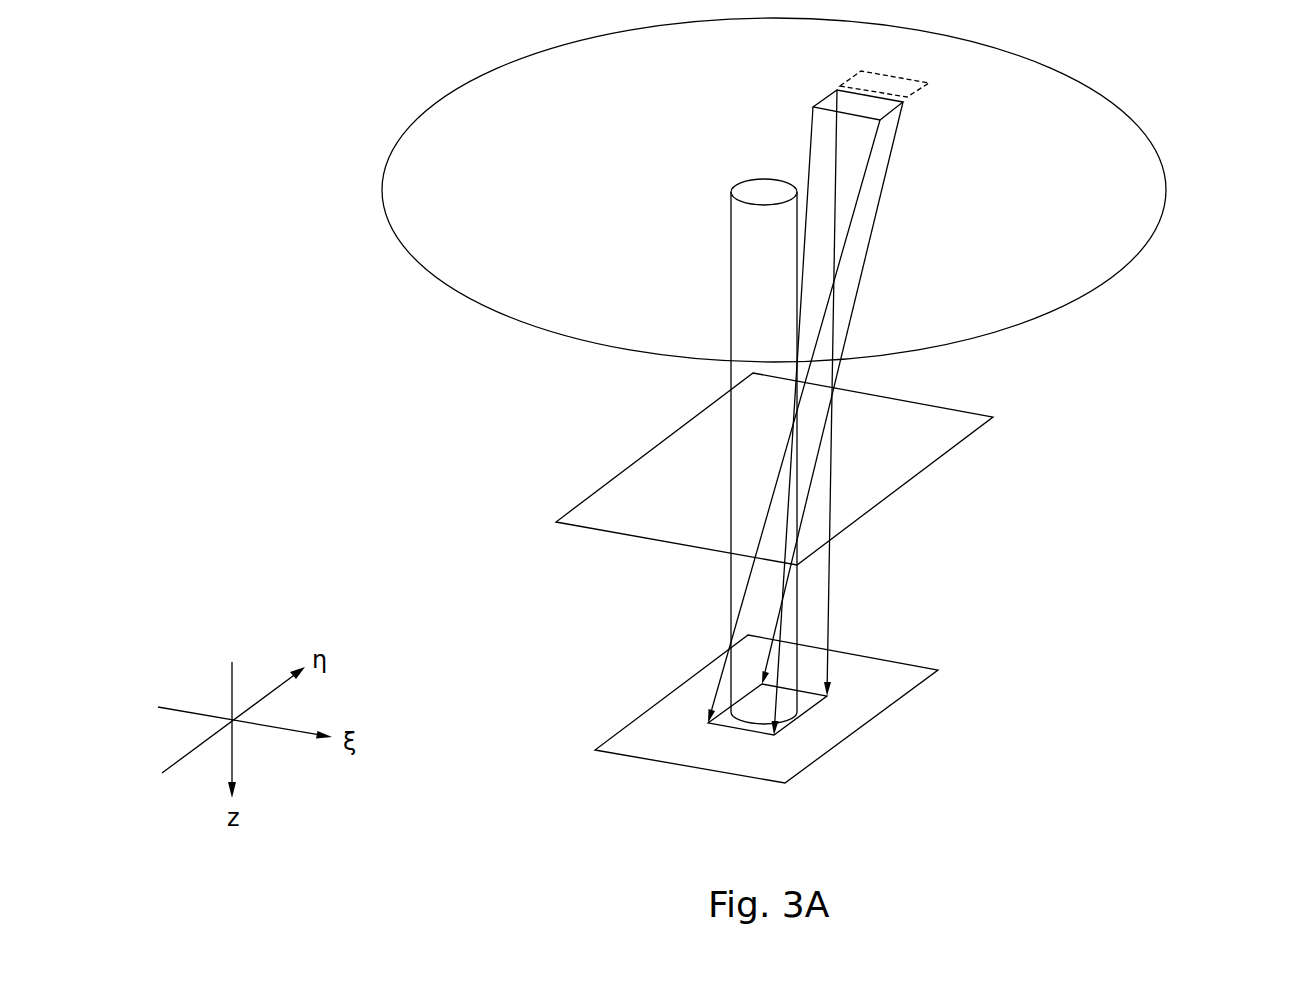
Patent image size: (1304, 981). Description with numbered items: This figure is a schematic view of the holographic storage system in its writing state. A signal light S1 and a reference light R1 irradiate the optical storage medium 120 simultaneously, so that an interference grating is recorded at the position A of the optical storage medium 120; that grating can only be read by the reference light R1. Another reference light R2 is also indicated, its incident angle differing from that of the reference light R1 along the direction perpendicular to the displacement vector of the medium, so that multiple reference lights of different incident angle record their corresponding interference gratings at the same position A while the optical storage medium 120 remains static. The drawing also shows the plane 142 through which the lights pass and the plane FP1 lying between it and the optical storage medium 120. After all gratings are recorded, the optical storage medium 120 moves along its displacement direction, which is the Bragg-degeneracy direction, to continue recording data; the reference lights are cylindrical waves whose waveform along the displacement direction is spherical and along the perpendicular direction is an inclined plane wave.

The light source / illumination aperture plane 142 is at (1166, 187).
The signal light S1 is at (756, 435).
The reference light R1 is at (805, 404).
The another reference light R2 is at (873, 69).
The first focal plane FP1 is at (945, 453).
The optical storage medium 120 is at (882, 709).
The position A is at (824, 716).